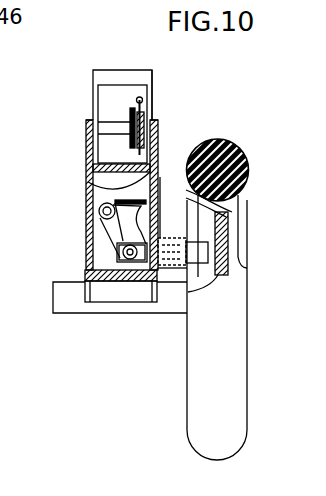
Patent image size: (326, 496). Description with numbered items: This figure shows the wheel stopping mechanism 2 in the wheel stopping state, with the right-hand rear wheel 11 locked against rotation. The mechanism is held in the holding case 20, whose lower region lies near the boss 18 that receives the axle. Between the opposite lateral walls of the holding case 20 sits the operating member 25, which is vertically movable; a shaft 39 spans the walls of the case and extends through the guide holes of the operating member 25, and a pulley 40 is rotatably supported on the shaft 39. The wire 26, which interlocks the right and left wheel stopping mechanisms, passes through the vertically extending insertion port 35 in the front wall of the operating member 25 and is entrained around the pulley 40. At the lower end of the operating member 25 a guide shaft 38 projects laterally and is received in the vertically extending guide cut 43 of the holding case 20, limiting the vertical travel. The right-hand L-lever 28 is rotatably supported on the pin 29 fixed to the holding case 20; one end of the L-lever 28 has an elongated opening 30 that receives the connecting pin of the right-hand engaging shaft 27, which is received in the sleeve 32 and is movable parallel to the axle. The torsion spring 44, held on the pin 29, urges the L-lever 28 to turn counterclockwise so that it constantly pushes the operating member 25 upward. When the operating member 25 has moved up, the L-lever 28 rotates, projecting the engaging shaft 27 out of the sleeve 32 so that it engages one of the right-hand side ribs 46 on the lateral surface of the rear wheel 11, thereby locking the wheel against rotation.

The wheel stopping mechanism 2 is at (70, 205).
The right-hand rear wheel 11 is at (247, 392).
The boss 18 is at (73, 310).
The holding case 20 is at (88, 158).
The operating member 25 is at (142, 72).
The wire 26 is at (148, 152).
The right-hand engaging shaft 27 is at (203, 253).
The right-hand L-lever 28 is at (108, 208).
The pin 29 is at (104, 214).
The elongated opening 30 is at (112, 243).
The sleeve 32 is at (165, 238).
The insertion port 35 is at (141, 101).
The guide shaft 38 is at (122, 281).
The shaft 39 is at (107, 128).
The pulley 40 is at (132, 113).
The guide cut 43 is at (85, 292).
The right-hand torsion spring 44 is at (157, 178).
The right-hand side ribs 46 is at (214, 222).